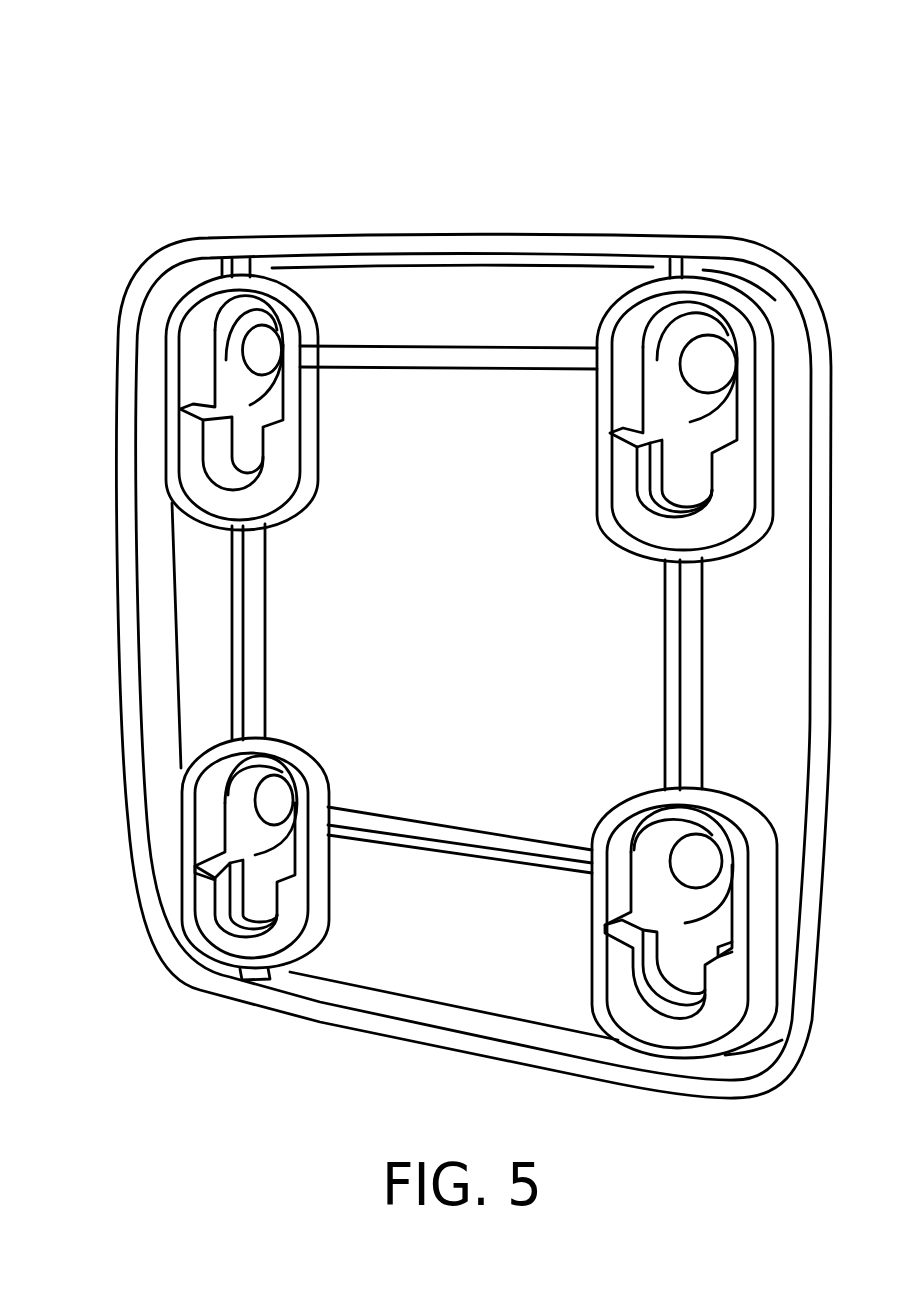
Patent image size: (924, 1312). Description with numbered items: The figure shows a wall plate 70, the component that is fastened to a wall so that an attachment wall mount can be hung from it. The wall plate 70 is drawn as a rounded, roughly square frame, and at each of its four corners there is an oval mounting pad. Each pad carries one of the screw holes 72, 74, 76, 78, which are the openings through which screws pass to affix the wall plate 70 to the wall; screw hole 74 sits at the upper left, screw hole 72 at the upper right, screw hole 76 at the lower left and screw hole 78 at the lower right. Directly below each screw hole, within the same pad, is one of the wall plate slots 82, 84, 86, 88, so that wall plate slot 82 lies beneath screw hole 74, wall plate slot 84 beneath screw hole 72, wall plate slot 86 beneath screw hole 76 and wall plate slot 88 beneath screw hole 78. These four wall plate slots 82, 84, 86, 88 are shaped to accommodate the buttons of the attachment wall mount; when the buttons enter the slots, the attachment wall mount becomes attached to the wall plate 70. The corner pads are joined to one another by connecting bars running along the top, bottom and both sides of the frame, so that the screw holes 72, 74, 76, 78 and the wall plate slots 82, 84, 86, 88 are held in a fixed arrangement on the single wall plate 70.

The wall plate 70 is at (152, 175).
The screw hole 72 is at (700, 355).
The screw hole 74 is at (262, 352).
The screw hole 76 is at (272, 795).
The screw hole 78 is at (688, 857).
The wall plate slot 82 is at (227, 460).
The wall plate slot 84 is at (680, 487).
The wall plate slot 86 is at (255, 900).
The wall plate slot 88 is at (652, 980).